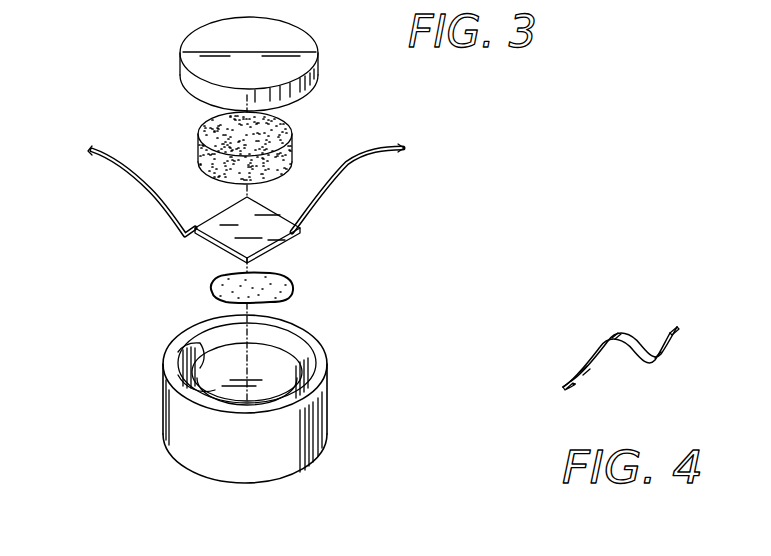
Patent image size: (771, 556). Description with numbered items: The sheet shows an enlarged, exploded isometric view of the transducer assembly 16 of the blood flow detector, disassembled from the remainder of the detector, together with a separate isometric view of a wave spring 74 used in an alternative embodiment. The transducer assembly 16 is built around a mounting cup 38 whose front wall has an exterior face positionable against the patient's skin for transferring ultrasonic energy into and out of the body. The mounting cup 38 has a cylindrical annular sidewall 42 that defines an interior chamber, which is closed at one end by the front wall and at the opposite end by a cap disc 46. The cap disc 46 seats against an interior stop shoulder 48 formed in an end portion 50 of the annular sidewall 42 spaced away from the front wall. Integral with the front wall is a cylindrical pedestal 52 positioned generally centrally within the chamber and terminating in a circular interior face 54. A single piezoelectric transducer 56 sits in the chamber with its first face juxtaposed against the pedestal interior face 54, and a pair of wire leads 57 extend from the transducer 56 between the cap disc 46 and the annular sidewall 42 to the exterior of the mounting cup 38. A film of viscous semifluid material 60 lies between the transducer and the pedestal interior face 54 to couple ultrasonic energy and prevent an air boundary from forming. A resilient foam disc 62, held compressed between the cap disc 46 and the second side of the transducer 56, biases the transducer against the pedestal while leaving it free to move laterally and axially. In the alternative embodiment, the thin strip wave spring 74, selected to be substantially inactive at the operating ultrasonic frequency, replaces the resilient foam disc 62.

In FIG. 3, the transducer assembly 16 is at (452, 153).
In FIG. 3, the mounting cup 38 is at (325, 418).
In FIG. 3, the cylindrical annular sidewall 42 is at (283, 370).
In FIG. 3, the cap disc 46 is at (222, 63).
In FIG. 3, the interior stop shoulder 48 is at (283, 342).
In FIG. 3, the end portion 50 is at (305, 348).
In FIG. 3, the cylindrical pedestal 52 is at (178, 385).
In FIG. 3, the circular interior face 54 is at (178, 355).
In FIG. 3, the piezoelectric transducer 56 is at (280, 233).
In FIG. 3, the wire leads 57 is at (140, 183).
In FIG. 3, the film of viscous semifluid material 60 is at (207, 287).
In FIG. 3, the resilient foam disc 62 is at (293, 148).
In FIG. 4, the wave spring 74 is at (608, 342).